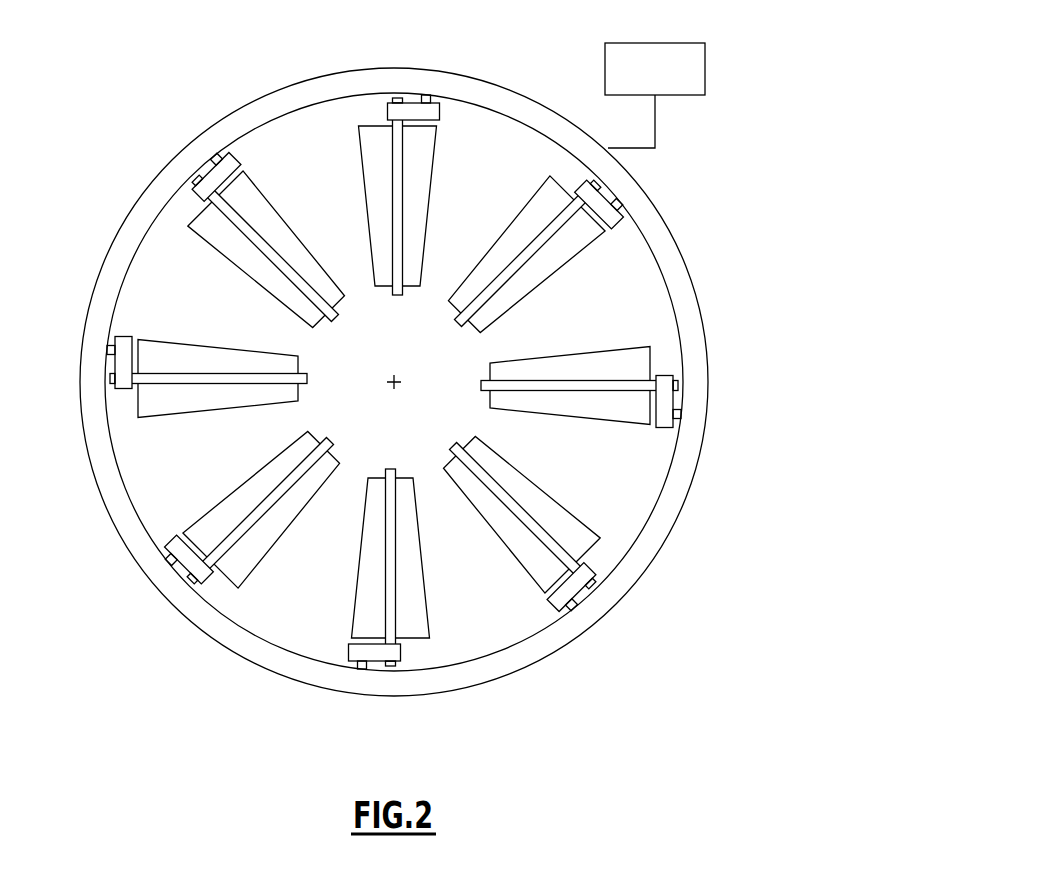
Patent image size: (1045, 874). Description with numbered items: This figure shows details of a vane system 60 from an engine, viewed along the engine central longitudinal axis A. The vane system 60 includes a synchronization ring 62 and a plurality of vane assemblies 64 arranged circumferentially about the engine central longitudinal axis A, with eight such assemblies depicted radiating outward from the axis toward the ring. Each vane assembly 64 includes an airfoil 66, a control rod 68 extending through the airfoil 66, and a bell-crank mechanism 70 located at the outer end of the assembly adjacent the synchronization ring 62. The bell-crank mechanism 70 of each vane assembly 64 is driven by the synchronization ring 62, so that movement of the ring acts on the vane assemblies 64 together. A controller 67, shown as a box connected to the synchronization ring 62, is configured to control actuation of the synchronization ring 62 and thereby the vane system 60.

The vane system 60 is at (437, 359).
The synchronization ring 62 is at (305, 80).
The vane assemblies 64 is at (450, 358).
The airfoil 66 is at (430, 195).
The controller 67 is at (672, 85).
The control rod 68 is at (537, 232).
The bell-crank mechanism 70 is at (443, 110).
The engine central longitudinal axis A is at (396, 386).